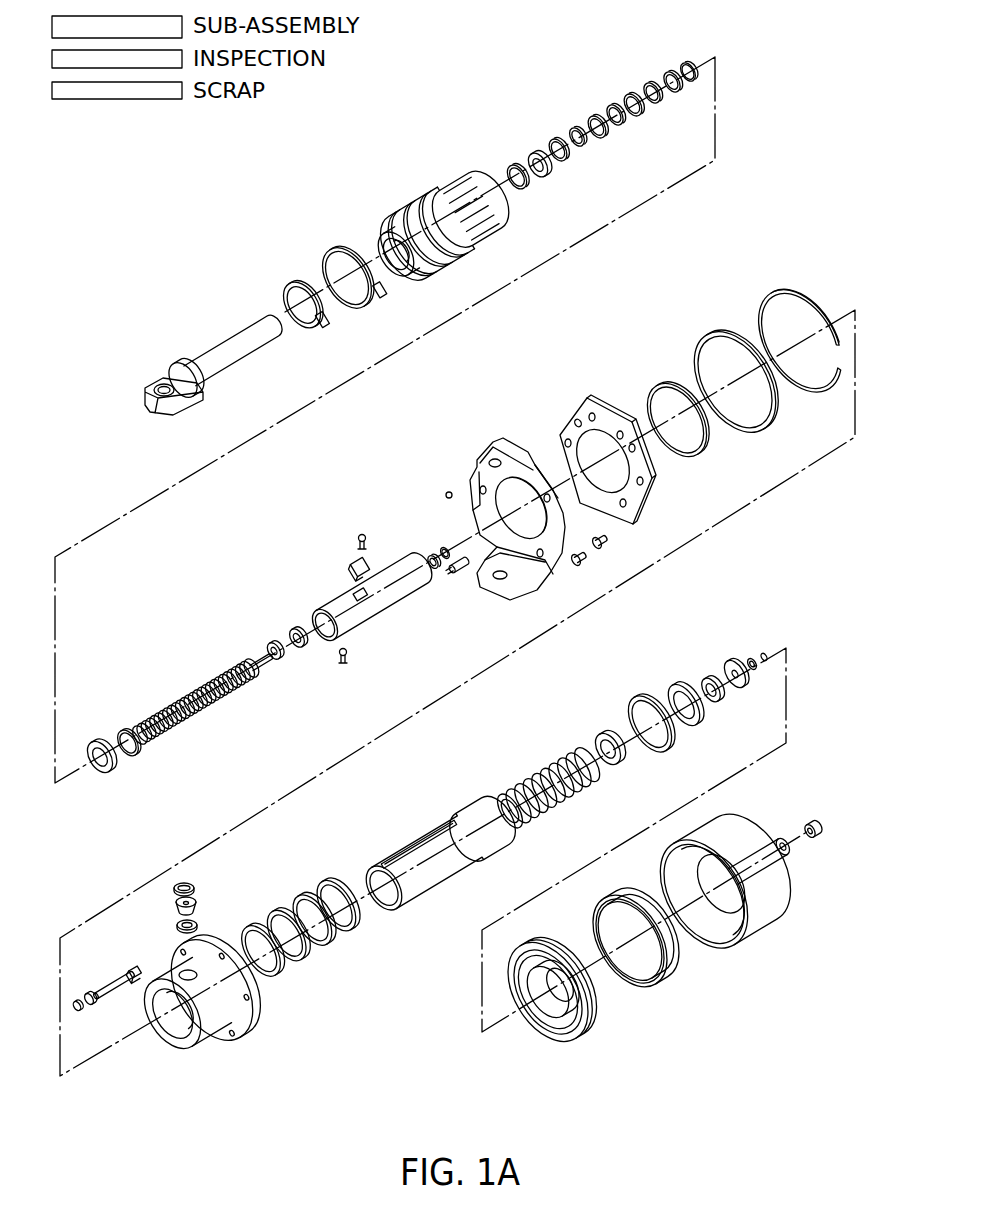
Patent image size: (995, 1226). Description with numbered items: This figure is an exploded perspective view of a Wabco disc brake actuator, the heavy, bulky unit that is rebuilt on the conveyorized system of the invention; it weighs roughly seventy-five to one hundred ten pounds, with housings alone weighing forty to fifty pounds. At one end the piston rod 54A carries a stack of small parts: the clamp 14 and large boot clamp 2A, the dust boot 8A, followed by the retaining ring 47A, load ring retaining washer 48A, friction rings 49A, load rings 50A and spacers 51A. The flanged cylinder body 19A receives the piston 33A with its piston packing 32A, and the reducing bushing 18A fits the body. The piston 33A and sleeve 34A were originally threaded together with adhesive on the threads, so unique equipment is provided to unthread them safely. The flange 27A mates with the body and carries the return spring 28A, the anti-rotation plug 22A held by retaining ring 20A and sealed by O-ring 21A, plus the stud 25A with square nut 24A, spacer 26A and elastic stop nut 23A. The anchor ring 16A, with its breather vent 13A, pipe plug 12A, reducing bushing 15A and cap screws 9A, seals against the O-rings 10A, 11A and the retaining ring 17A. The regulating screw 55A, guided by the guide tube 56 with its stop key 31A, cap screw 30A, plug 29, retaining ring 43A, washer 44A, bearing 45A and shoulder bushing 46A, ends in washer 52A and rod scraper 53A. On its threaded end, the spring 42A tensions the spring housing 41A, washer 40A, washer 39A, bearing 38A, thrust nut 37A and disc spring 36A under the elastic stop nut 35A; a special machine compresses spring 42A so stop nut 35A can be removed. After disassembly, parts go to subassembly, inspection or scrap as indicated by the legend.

The large boot clamp 2A is at (344, 250).
The dust boot 8A is at (428, 198).
The socket head cap screws 9A is at (458, 580).
The O-ring 10A is at (662, 380).
The O-ring 11A is at (716, 330).
The pipe plug 12A is at (447, 490).
The breather vent 13A is at (577, 568).
The clip ring 14 is at (292, 287).
The reducing bushing 15A is at (603, 548).
The anchor ring 16A is at (504, 600).
The retaining ring 17A is at (776, 290).
The reducing bushing 18A is at (813, 822).
The cylinder body 19A is at (773, 932).
The retaining ring 20A is at (195, 882).
The O-ring 21A is at (197, 925).
The anti-rotation plug 22A is at (198, 902).
The elastic stop nut 23A is at (78, 1012).
The square nut 24A is at (88, 993).
The stud 25A is at (117, 989).
The spacer 26A is at (135, 965).
The flange 27A is at (245, 1045).
The return spring 28A is at (293, 912).
The plug 29 is at (344, 667).
The socket head cap screw 30A is at (362, 533).
The stop key 31A is at (352, 562).
The piston packing 32A is at (665, 990).
The piston 33A is at (576, 1045).
The piston sleeve 34A is at (421, 860).
The elastic stop nut 35A is at (769, 653).
The disc spring 36A is at (752, 657).
The thrust nut 37A is at (731, 662).
The bearing 38A is at (705, 680).
The washer 39A is at (671, 694).
The washer 40A is at (633, 710).
The spring housing 41A is at (596, 740).
The spring 42A is at (537, 784).
The retaining ring 43A is at (443, 547).
The washer 44A is at (428, 556).
The bearing 45A is at (298, 626).
The shoulder bushing 46A is at (268, 642).
The retaining ring 47A is at (510, 166).
The load ring retaining washer 48A is at (546, 177).
The friction ring 49A is at (553, 140).
The load ring 50A is at (612, 104).
The spacer 51A is at (592, 117).
The washer 52A is at (99, 740).
The rod scraper 53A is at (128, 729).
The piston rod 54A is at (214, 360).
The regulating screw 55A is at (207, 692).
The guide tube 56 is at (382, 628).